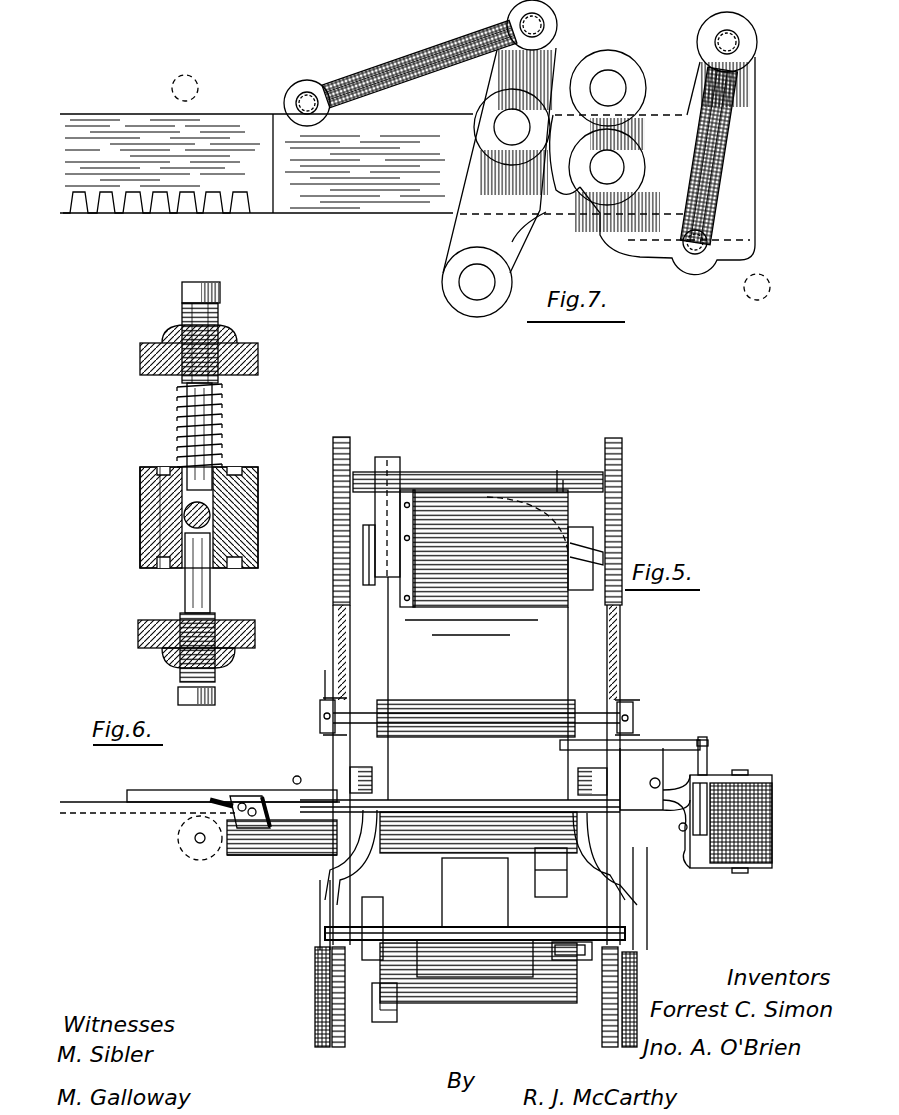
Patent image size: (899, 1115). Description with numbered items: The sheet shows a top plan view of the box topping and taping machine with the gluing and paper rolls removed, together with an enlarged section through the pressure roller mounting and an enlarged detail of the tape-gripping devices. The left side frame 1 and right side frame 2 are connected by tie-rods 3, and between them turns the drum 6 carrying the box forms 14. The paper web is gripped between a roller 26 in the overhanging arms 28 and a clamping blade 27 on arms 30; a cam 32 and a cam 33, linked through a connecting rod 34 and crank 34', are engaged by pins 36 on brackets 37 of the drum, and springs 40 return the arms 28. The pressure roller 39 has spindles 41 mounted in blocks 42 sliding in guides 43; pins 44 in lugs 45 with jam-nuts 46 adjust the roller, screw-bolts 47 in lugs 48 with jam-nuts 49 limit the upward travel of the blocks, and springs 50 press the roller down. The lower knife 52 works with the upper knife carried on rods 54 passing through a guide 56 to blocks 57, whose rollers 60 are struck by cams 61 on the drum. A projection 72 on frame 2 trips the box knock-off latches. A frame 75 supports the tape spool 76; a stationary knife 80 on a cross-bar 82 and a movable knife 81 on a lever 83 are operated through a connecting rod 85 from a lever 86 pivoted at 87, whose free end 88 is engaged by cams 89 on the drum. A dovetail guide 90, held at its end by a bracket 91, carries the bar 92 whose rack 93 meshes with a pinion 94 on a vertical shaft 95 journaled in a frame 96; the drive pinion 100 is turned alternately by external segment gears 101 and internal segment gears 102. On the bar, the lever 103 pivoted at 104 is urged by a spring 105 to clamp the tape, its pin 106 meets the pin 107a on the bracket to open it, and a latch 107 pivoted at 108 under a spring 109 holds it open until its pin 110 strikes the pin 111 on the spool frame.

In FIG. 5, the left side frame 1 is at (352, 423).
In FIG. 5, the right side frame 2 is at (625, 430).
In FIG. 5, the tie-rods 3 is at (472, 470).
In FIG. 5, the drum 6 is at (492, 1020).
In FIG. 5, the box forms 14 is at (475, 958).
In FIG. 5, the roller 26 is at (494, 750).
In FIG. 5, the clamping blade 27 is at (478, 845).
In FIG. 5, the overhanging arms 28 is at (320, 885).
In FIG. 5, the arms 30 is at (481, 862).
In FIG. 5, the cam 32 is at (551, 871).
In FIG. 5, the cam 33 is at (590, 870).
In FIG. 5, the connecting rod 34 is at (666, 949).
In FIG. 5, the crank 34' is at (682, 928).
In FIG. 5, the pins 36 is at (572, 960).
In FIG. 5, the brackets 37 is at (507, 960).
In FIG. 6, the pressure roller 39 is at (258, 485).
In FIG. 5, the pressure roller 39 is at (475, 700).
In FIG. 5, the springs 40 is at (315, 990).
In FIG. 6, the spindles 41 is at (212, 517).
In FIG. 5, the spindles 41 is at (365, 713).
In FIG. 6, the blocks 42 is at (225, 470).
In FIG. 5, the blocks 42 is at (633, 718).
In FIG. 6, the guides 43 is at (140, 540).
In FIG. 5, the guides 43 is at (633, 705).
In FIG. 6, the pins 44 is at (205, 605).
In FIG. 6, the lugs 45 is at (255, 635).
In FIG. 6, the jam-nuts 46 is at (235, 660).
In FIG. 6, the screw-bolts 47 is at (258, 360).
In FIG. 5, the screw-bolts 47 is at (690, 705).
In FIG. 6, the lugs 48 is at (250, 343).
In FIG. 6, the jam-nuts 49 is at (232, 330).
In FIG. 6, the springs 50 is at (222, 406).
In FIG. 5, the lower knife 52 is at (445, 800).
In FIG. 5, the rods 54 is at (660, 772).
In FIG. 5, the guide 56 is at (628, 790).
In FIG. 5, the blocks 57 is at (375, 800).
In FIG. 5, the rollers 60 is at (372, 778).
In FIG. 5, the cams 61 is at (590, 540).
In FIG. 5, the projection 72 is at (524, 524).
In FIG. 5, the frame 75 is at (725, 870).
In FIG. 5, the tape spool 76 is at (772, 855).
In FIG. 5, the stationary knife 80 is at (772, 800).
In FIG. 5, the movable knife 81 is at (772, 826).
In FIG. 5, the cross-bar 82 is at (690, 870).
In FIG. 5, the lever 83 is at (707, 760).
In FIG. 5, the connecting rod 85 is at (707, 744).
In FIG. 5, the lever 86 is at (675, 748).
In FIG. 5, the pivot 87 is at (578, 775).
In FIG. 5, the free end 88 is at (560, 750).
In FIG. 5, the cams 89 is at (563, 478).
In FIG. 5, the dovetail guide 90 is at (647, 890).
In FIG. 5, the bracket 91 is at (170, 790).
In FIG. 7, the bar 92 is at (374, 164).
In FIG. 5, the bar 92 is at (100, 802).
In FIG. 7, the rack 93 is at (182, 215).
In FIG. 5, the rack 93 is at (140, 820).
In FIG. 5, the pinion 94 is at (195, 843).
In FIG. 5, the vertical shaft 95 is at (190, 848).
In FIG. 5, the frame 96 is at (305, 855).
In FIG. 5, the pinion 100 is at (409, 862).
In FIG. 5, the external segment gears 101 is at (372, 995).
In FIG. 5, the internal segment gears 102 is at (392, 458).
In FIG. 7, the lever 103 is at (755, 235).
In FIG. 5, the lever 103 is at (268, 830).
In FIG. 7, the pivot 104 is at (615, 173).
In FIG. 7, the spring 105 is at (728, 143).
In FIG. 7, the pin 106 is at (608, 77).
In FIG. 7, the latch 107 is at (528, 187).
In FIG. 5, the latch 107 is at (240, 830).
In FIG. 7, the pin 107a is at (198, 88).
In FIG. 5, the pin 107a is at (248, 800).
In FIG. 7, the pivot 108 is at (497, 130).
In FIG. 7, the spring 109 is at (380, 72).
In FIG. 7, the pin 110 is at (476, 285).
In FIG. 7, the pin 111 is at (752, 299).
In FIG. 5, the pin 111 is at (680, 825).